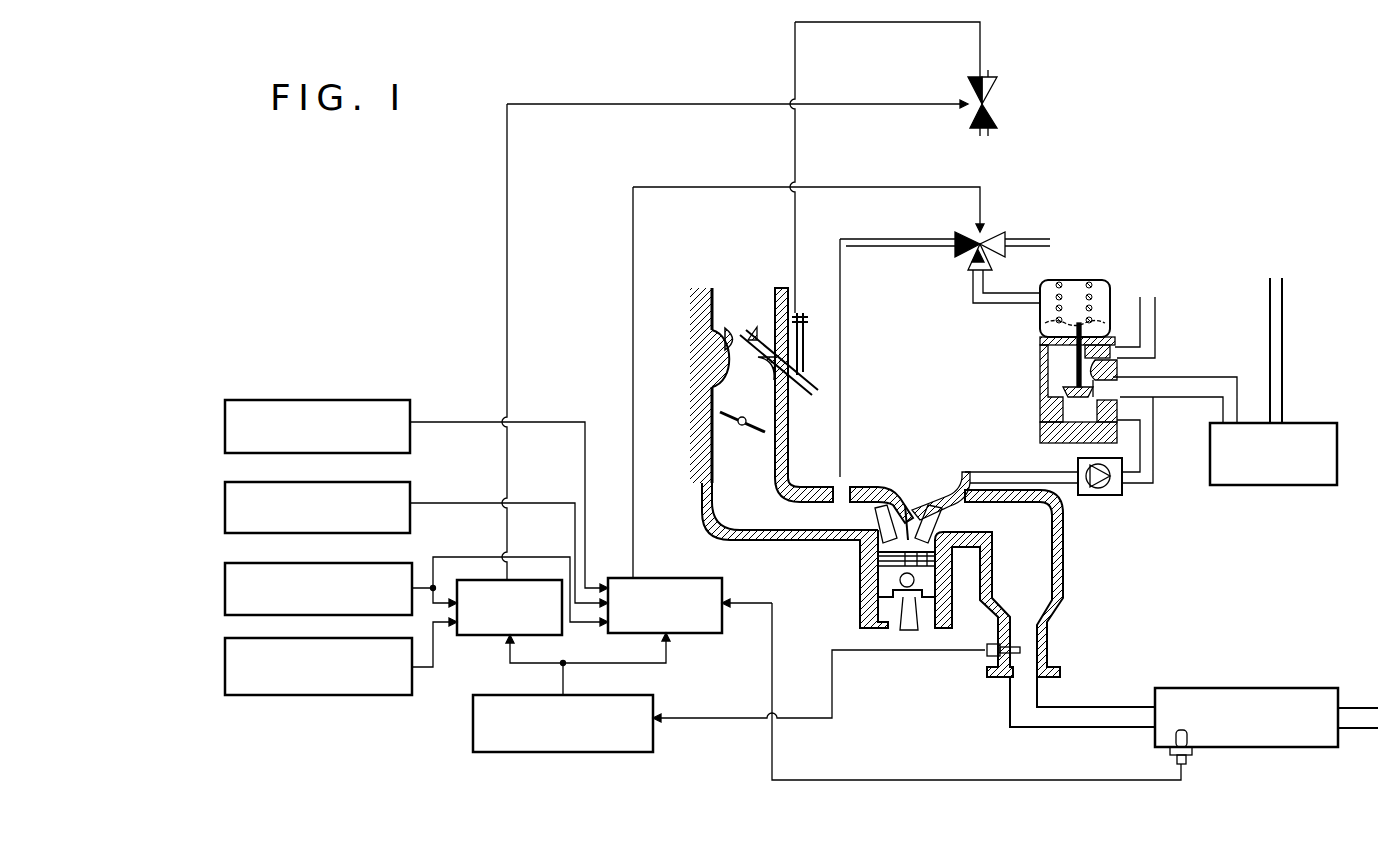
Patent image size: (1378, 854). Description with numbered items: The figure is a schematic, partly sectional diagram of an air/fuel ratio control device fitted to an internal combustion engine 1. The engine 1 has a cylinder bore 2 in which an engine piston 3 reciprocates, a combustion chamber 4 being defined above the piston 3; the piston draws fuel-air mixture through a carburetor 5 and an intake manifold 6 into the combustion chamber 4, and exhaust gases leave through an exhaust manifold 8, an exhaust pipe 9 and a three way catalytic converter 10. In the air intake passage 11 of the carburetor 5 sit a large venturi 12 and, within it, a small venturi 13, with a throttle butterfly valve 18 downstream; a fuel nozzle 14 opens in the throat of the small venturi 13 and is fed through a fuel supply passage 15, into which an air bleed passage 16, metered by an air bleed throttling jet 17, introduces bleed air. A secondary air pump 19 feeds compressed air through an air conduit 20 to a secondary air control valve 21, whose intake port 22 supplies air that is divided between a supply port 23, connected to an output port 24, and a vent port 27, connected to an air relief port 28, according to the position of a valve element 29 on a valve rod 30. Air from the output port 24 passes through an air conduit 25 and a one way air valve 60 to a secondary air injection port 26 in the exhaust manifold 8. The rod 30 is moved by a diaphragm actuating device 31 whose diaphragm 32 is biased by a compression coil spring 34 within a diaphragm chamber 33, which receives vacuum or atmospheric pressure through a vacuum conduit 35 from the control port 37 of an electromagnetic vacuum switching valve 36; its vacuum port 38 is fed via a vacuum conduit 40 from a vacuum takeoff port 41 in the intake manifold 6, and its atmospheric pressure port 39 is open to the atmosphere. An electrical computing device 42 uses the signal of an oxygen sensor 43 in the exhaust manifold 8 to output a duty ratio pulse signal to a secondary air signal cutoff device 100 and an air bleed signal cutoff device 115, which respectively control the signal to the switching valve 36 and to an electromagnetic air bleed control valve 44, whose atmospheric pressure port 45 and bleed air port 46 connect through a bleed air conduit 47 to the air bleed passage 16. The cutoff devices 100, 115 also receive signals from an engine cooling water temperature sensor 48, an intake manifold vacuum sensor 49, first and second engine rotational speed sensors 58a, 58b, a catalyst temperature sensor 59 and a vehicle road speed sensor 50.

The internal combustion engine 1 is at (857, 572).
The cylinder bore 2 is at (877, 562).
The engine piston 3 is at (885, 590).
The combustion chamber 4 is at (908, 512).
The carburetor 5 is at (692, 352).
The intake manifold 6 is at (743, 541).
The exhaust manifold 8 is at (1064, 528).
The exhaust pipe 9 is at (1098, 707).
The three way catalytic converter 10 is at (1252, 688).
The air intake passage 11 is at (768, 406).
The large venturi 12 is at (718, 372).
The small venturi 13 is at (724, 334).
The fuel nozzle 14 is at (754, 328).
The fuel supply passage 15 is at (770, 380).
The air bleed passage 16 is at (806, 350).
The air bleed throttling jet 17 is at (806, 320).
The throttle butterfly valve 18 is at (760, 432).
The secondary air pump 19 is at (1338, 446).
The air conduit 20 is at (1212, 377).
The secondary air control valve 21 is at (1089, 384).
The intake port 22 is at (1118, 388).
The supply port 23 is at (1068, 405).
The output port 24 is at (1100, 443).
The air conduit 25 is at (1153, 484).
The secondary air injection port 26 is at (962, 476).
The vent port 27 is at (1120, 368).
The air relief port 28 is at (1130, 350).
The valve element 29 is at (1062, 392).
The valve rod 30 is at (1042, 337).
The diaphragm actuating device 31 is at (1091, 301).
The diaphragm 32 is at (1106, 320).
The diaphragm chamber 33 is at (1078, 290).
The compression coil spring 34 is at (1100, 286).
The vacuum conduit 35 is at (990, 306).
The electromagnetic vacuum switching valve 36 is at (990, 226).
The control port 37 is at (970, 280).
The vacuum port 38 is at (944, 238).
The atmospheric pressure port 39 is at (1014, 238).
The vacuum conduit 40 is at (842, 446).
The vacuum takeoff port 41 is at (846, 488).
The electrical computing device 42 is at (540, 753).
The oxygen sensor 43 is at (985, 656).
The electromagnetic air bleed control valve 44 is at (991, 99).
The atmospheric pressure port 45 is at (986, 132).
The bleed air port 46 is at (975, 70).
The bleed air conduit 47 is at (862, 28).
The engine cooling water temperature sensor 48 is at (398, 563).
The intake manifold vacuum sensor 49 is at (308, 400).
The vehicle road speed sensor 50 is at (308, 695).
The first engine rotational speed sensor 58a is at (364, 492).
The second engine rotational speed sensor 58b is at (404, 482).
The catalyst temperature sensor 59 is at (1190, 745).
The one way air valve 60 is at (1106, 496).
The secondary air signal cutoff device 100 is at (690, 634).
The air bleed signal cutoff device 115 is at (478, 636).